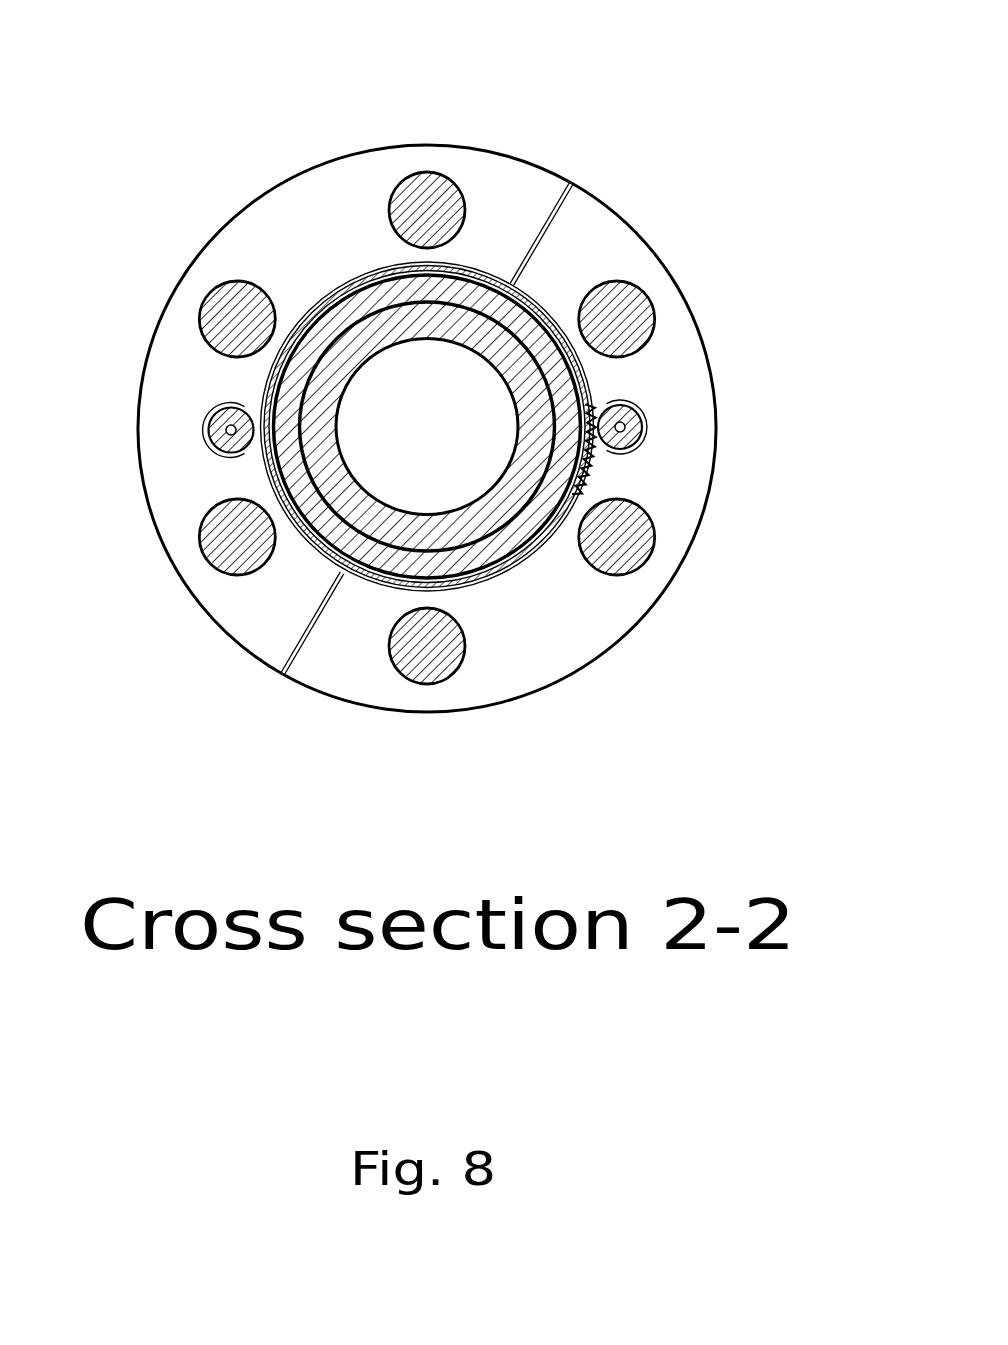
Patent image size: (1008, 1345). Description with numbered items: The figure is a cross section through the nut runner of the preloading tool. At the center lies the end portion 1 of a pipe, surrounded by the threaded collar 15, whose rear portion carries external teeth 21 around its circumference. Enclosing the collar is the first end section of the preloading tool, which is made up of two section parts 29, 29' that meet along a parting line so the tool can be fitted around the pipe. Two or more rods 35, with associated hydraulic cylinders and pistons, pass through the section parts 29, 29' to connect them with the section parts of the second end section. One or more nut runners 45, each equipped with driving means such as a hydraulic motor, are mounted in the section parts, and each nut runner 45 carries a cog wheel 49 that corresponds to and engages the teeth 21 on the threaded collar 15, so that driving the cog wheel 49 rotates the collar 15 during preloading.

The end portion 1 is at (482, 513).
The threaded collar 15 is at (588, 383).
The external teeth 21 is at (590, 483).
The section part 29 is at (554, 372).
The section part 29' is at (355, 345).
The rods 35 is at (460, 193).
The nut runner 45 is at (683, 402).
The cog wheel 49 is at (638, 453).